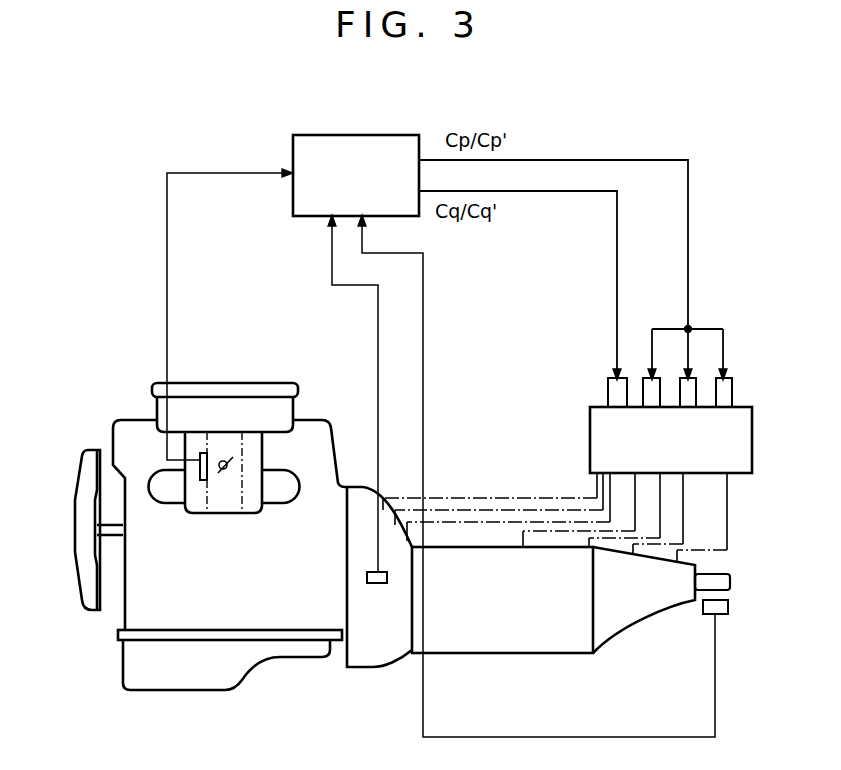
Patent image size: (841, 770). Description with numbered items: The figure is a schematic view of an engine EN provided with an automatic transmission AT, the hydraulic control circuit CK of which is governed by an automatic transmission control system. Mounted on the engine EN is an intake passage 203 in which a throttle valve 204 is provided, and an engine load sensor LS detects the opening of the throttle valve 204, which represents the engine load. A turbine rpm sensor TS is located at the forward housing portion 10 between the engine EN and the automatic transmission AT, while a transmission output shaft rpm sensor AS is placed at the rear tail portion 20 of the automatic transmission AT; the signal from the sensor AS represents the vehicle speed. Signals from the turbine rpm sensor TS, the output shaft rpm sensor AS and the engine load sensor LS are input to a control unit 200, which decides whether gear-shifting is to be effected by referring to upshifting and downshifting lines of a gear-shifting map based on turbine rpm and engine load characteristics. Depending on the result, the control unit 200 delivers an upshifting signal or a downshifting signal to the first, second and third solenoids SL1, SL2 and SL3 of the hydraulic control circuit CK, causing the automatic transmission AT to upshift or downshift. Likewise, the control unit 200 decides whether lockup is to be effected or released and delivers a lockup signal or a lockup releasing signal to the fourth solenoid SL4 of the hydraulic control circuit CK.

The control unit 200 is at (363, 134).
The hydraulic control circuit CK is at (590, 442).
The first solenoid SL1 is at (643, 386).
The second solenoid SL2 is at (696, 388).
The third solenoid SL3 is at (732, 399).
The fourth solenoid SL4 is at (608, 394).
The engine EN is at (122, 610).
The engine load sensor LS is at (198, 516).
The throttle valve 204 is at (240, 470).
The intake passage 203 is at (244, 505).
The turbine rpm sensor TS is at (378, 583).
The torque converter housing 10 is at (376, 668).
The automatic transmission AT is at (488, 664).
The transmission tail housing 20 is at (620, 633).
The transmission output shaft rpm sensor AS is at (728, 607).